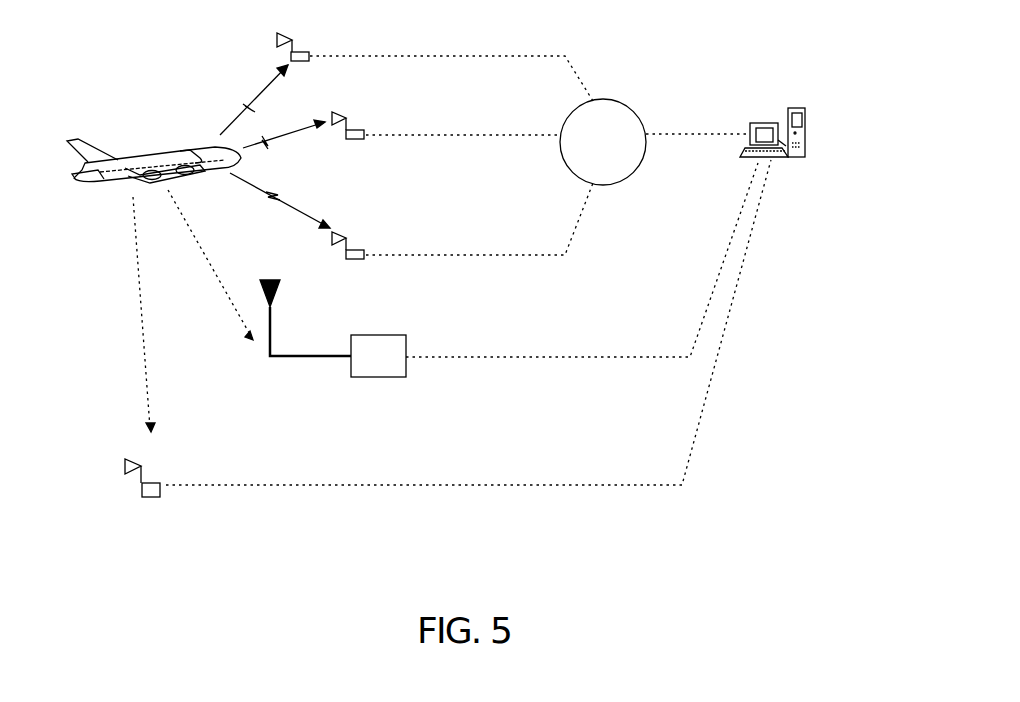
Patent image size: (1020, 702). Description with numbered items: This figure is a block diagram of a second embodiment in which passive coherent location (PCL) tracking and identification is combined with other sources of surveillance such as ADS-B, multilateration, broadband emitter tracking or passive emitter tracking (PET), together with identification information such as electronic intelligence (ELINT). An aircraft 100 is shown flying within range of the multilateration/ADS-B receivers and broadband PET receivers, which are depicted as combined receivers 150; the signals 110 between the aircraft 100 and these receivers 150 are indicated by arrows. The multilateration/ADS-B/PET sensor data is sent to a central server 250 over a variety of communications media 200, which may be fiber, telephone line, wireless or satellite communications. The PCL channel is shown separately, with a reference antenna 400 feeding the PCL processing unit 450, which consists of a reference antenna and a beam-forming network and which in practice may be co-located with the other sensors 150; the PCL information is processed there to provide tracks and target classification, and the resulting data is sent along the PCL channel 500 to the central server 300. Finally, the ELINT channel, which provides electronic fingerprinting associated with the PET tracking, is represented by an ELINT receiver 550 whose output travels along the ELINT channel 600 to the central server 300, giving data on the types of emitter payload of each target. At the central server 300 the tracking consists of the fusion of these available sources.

The aircraft 100 is at (175, 152).
The reflected signals 110 is at (263, 89).
The combined receivers 150 is at (297, 51).
The communications 200 is at (525, 55).
The central server 250 is at (632, 108).
The central server 300 is at (806, 146).
The antenna 400 is at (240, 300).
The PCL channel 450 is at (351, 371).
The PCL channel 500 is at (480, 355).
The Elint receiver 550 is at (152, 482).
The Elint channel 600 is at (490, 484).